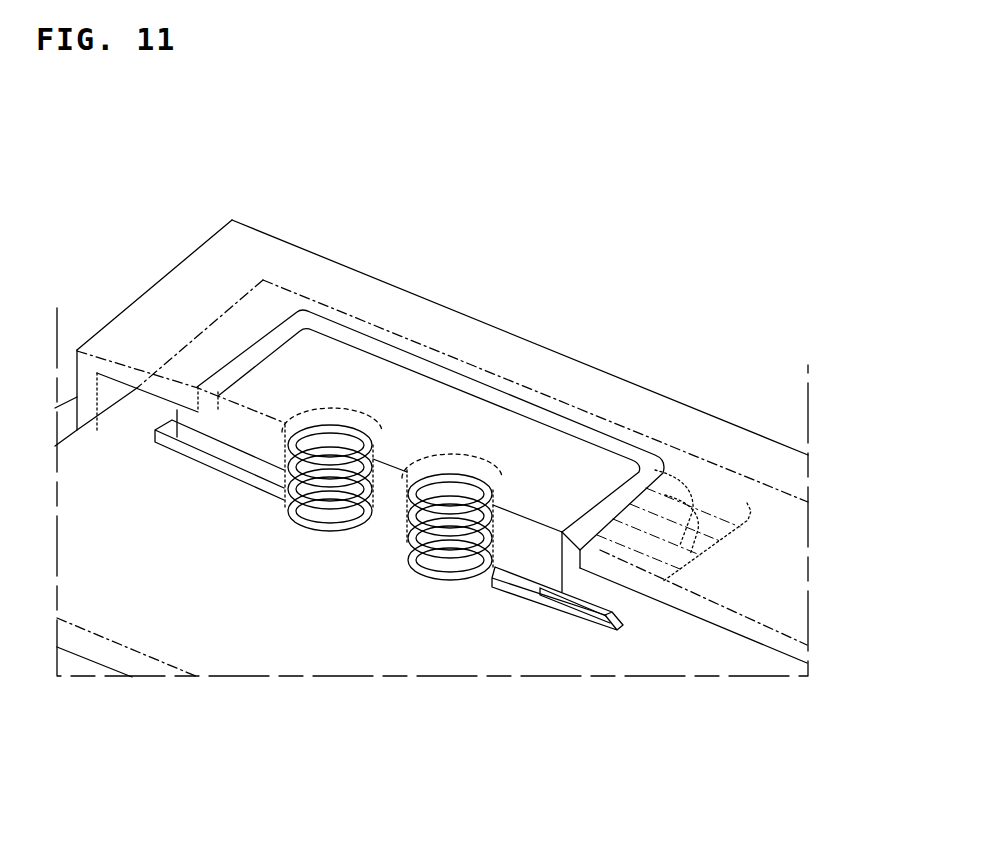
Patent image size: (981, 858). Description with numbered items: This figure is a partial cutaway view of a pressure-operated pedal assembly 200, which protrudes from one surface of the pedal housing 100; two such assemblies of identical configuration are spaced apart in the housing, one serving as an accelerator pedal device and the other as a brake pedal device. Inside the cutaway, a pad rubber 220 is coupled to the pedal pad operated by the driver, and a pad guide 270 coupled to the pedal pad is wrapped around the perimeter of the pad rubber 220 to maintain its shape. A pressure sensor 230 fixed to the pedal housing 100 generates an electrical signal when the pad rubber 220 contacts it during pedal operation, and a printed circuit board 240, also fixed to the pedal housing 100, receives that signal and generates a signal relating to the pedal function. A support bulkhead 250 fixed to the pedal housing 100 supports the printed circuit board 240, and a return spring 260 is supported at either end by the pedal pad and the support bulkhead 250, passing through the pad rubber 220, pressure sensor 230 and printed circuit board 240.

The pedal housing 100 is at (546, 375).
The pressure-operated pedal assembly 200 is at (374, 449).
The pad rubber 220 is at (417, 405).
The pressure sensor 230 is at (607, 612).
The printed circuit board 240 is at (527, 593).
The support bulkhead 250 is at (136, 603).
The return spring 260 is at (318, 533).
The pad guide 270 is at (620, 448).